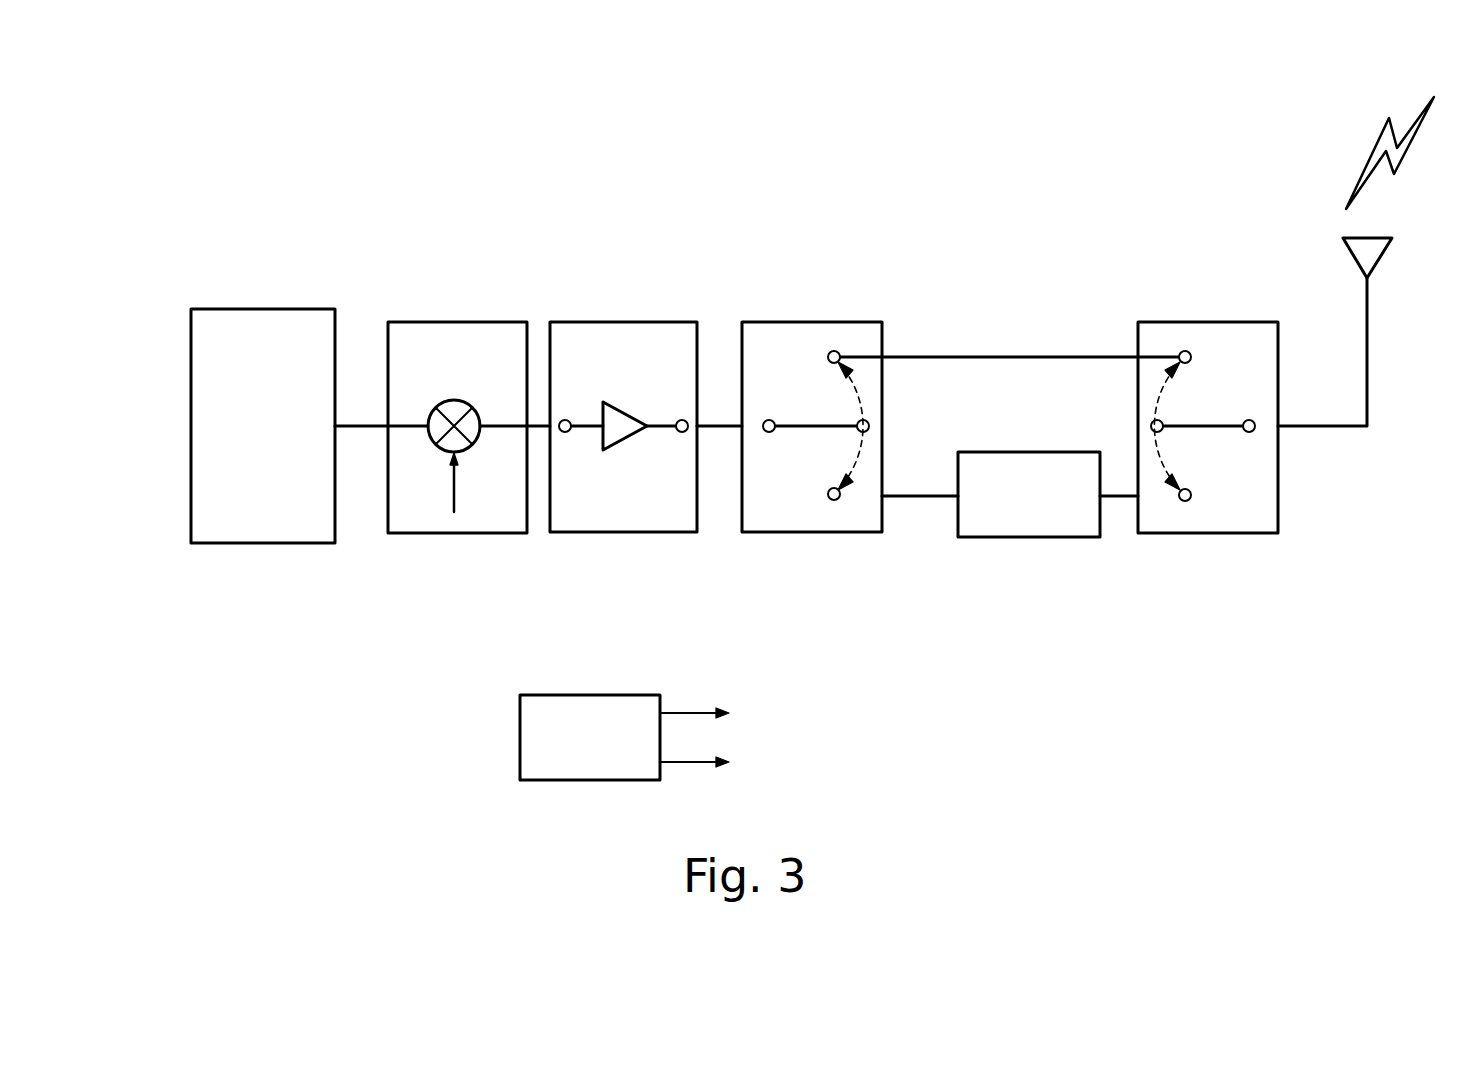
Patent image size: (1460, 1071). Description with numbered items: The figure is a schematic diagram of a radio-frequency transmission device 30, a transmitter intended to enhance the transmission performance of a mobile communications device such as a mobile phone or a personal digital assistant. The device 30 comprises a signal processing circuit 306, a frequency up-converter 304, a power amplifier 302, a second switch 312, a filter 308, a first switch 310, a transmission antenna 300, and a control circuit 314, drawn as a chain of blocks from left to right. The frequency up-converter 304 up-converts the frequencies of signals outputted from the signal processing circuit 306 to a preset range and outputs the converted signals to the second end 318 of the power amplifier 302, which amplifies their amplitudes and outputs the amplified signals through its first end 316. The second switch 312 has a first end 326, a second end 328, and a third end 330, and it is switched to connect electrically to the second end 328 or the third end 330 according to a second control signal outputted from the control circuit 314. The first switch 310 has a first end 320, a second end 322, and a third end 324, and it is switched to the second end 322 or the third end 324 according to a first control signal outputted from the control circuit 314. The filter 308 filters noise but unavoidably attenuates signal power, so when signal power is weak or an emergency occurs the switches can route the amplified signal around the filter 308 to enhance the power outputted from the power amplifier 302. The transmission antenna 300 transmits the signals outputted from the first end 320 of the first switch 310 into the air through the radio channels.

The radio-frequency transmission device 30 is at (302, 140).
The transmission antenna 300 is at (1364, 243).
The power amplifier 302 is at (586, 322).
The frequency up-converter 304 is at (422, 322).
The signal processing circuit 306 is at (223, 309).
The filter 308 is at (980, 452).
The first switch 310 is at (1224, 322).
The second switch 312 is at (782, 322).
The control circuit 314 is at (634, 695).
The first end of the power amplifier 316 is at (682, 419).
The second end of the power amplifier 318 is at (566, 433).
The first end of the first switch 320 is at (1250, 419).
The second end of the first switch 322 is at (1186, 350).
The third end of the first switch 324 is at (1187, 502).
The first end of the second switch 326 is at (769, 419).
The second end of the second switch 328 is at (835, 350).
The third end of the second switch 330 is at (835, 501).